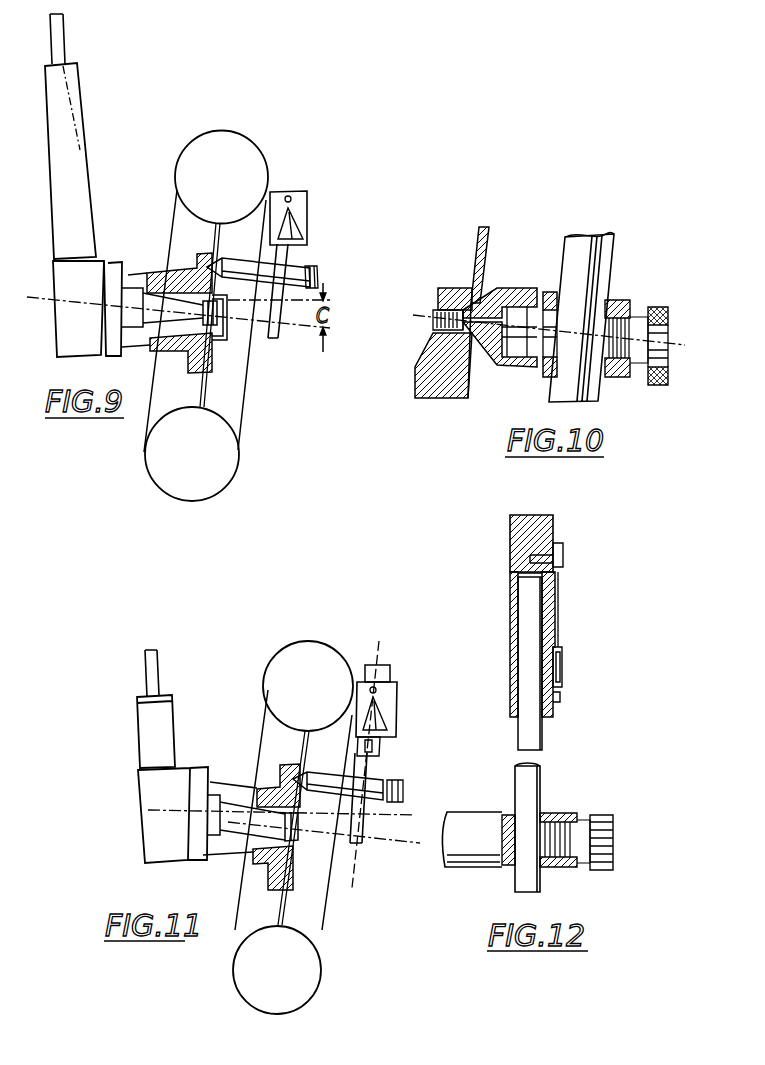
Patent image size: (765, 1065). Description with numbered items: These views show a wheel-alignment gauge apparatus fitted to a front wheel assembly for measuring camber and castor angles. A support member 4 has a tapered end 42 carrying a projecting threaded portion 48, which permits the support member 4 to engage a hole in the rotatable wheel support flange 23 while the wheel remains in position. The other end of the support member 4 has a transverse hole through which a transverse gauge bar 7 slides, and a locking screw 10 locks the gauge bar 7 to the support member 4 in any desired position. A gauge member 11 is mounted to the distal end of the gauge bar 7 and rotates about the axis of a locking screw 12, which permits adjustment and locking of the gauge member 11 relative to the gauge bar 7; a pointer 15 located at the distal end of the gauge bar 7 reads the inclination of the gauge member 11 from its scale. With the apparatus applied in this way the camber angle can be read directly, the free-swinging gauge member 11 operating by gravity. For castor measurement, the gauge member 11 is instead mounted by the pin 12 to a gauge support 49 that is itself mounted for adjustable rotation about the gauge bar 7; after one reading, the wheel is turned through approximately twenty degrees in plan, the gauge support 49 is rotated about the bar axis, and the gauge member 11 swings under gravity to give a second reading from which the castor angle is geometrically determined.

In FIG. 9, the support member 4 is at (296, 268).
In FIG. 10, the support member 4 is at (515, 287).
In FIG. 11, the support member 4 is at (333, 779).
In FIG. 12, the support member 4 is at (492, 852).
In FIG. 9, the gauge bar 7 is at (292, 313).
In FIG. 10, the gauge bar 7 is at (605, 275).
In FIG. 11, the gauge bar 7 is at (369, 771).
In FIG. 12, the gauge bar 7 is at (530, 774).
In FIG. 11, the locking screw 10 is at (404, 792).
In FIG. 12, the locking screw 10 is at (603, 837).
In FIG. 9, the gauge member 11 is at (300, 209).
In FIG. 11, the gauge member 11 is at (396, 702).
In FIG. 12, the gauge member 11 is at (558, 612).
In FIG. 11, the locking screw 12 is at (372, 888).
In FIG. 12, the locking screw 12 is at (565, 558).
In FIG. 11, the pointer 15 is at (380, 748).
In FIG. 12, the pointer 15 is at (562, 670).
In FIG. 9, the wheel support flange 23 is at (200, 370).
In FIG. 10, the wheel support flange 23 is at (453, 380).
In FIG. 11, the wheel support flange 23 is at (275, 889).
In FIG. 10, the end of support member 42 is at (490, 300).
In FIG. 10, the threaded portion 48 is at (433, 320).
In FIG. 11, the gauge support 49 is at (387, 673).
In FIG. 12, the gauge support 49 is at (553, 531).